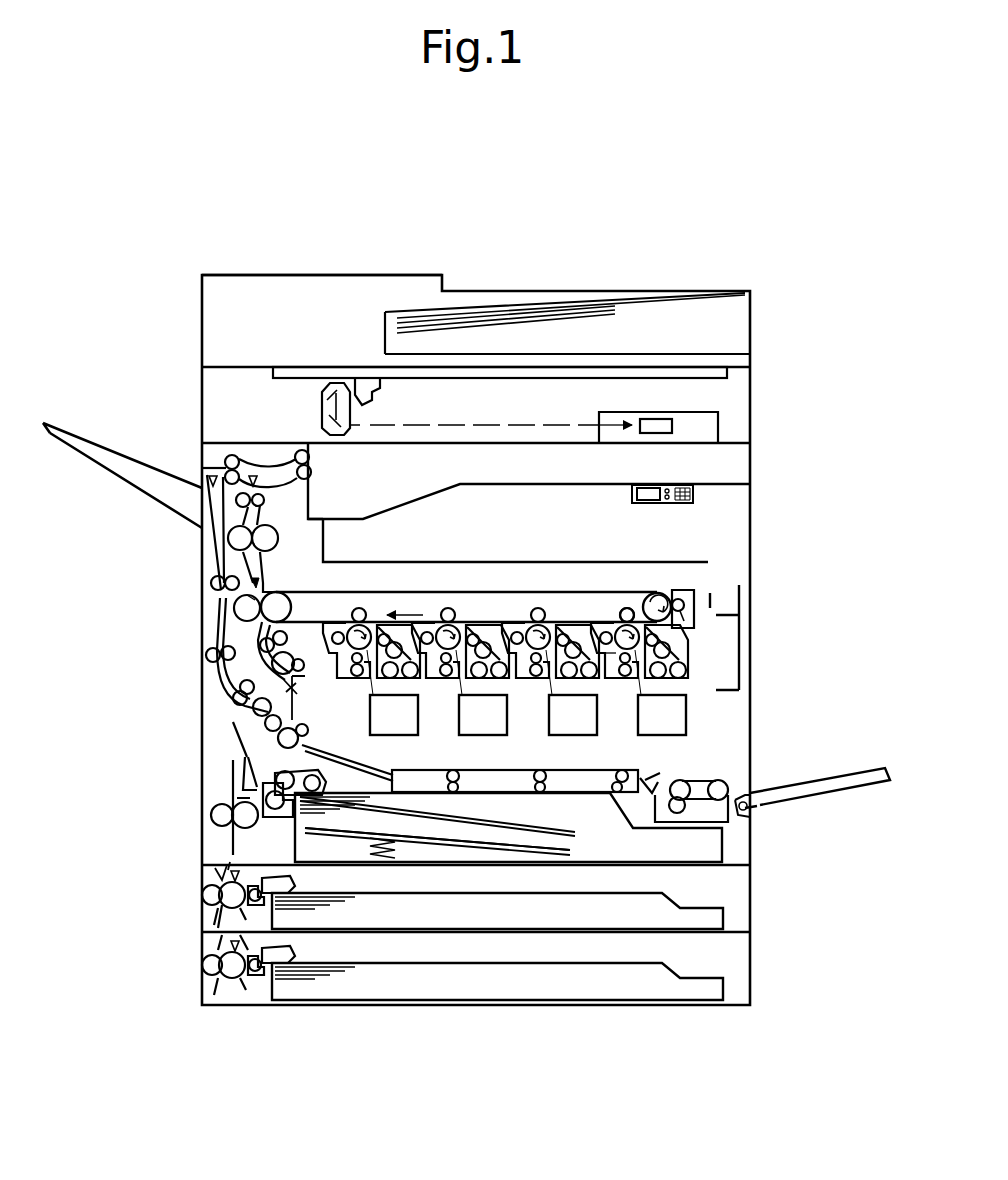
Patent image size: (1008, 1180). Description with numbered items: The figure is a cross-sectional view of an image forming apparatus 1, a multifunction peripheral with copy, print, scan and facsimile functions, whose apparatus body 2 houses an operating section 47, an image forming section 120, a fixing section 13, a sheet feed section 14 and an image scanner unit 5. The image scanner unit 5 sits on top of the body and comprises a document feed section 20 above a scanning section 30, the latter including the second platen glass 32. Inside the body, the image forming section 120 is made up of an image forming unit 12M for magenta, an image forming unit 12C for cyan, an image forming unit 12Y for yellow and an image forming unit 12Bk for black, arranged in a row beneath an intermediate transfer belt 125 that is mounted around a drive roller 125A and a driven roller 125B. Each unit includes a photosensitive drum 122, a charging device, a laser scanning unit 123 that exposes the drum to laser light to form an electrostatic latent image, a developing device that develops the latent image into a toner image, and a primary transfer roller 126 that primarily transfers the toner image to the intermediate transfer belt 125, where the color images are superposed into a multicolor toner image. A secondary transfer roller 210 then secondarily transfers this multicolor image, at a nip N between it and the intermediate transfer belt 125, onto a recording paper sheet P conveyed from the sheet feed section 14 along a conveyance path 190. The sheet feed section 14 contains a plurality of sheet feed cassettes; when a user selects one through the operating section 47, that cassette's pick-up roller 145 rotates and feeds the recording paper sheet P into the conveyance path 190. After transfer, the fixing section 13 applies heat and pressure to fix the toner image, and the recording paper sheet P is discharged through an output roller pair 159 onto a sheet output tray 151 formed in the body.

The image forming apparatus 1 is at (542, 163).
The apparatus body 2 is at (755, 505).
The image scanner unit 5 is at (182, 243).
The fixing section 13 is at (216, 540).
The sheet feed section 14 is at (730, 892).
The document feed section 20 is at (598, 276).
The scanning section 30 is at (180, 403).
The second platen glass 32 is at (615, 372).
The operating section 47 is at (695, 494).
The image forming section 120 is at (710, 626).
The photosensitive drum 122 is at (621, 657).
The laser scanning unit 123 is at (686, 707).
The intermediate transfer belt 125 is at (643, 597).
The drive roller 125A is at (273, 600).
The driven roller 125B is at (673, 597).
The primary transfer roller 126 is at (621, 606).
The pick-up roller 145 is at (280, 952).
The sheet output tray 151 is at (348, 518).
The output roller pair 159 is at (310, 458).
The conveyance path 190 is at (232, 616).
The secondary transfer roller 210 is at (214, 620).
The image forming unit for black 12Bk is at (369, 605).
The image forming unit for yellow 12Y is at (449, 605).
The image forming unit for cyan 12C is at (542, 605).
The image forming unit for magenta 12M is at (629, 604).
The nip N is at (248, 578).
The recording paper sheet P is at (560, 818).